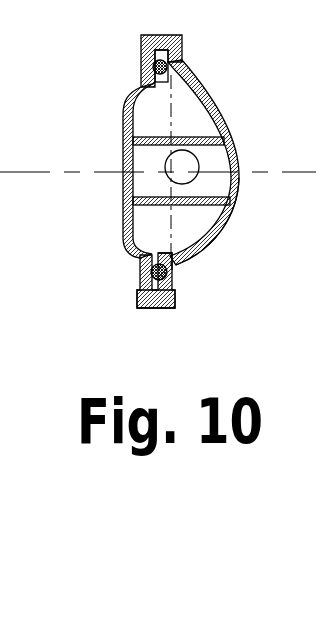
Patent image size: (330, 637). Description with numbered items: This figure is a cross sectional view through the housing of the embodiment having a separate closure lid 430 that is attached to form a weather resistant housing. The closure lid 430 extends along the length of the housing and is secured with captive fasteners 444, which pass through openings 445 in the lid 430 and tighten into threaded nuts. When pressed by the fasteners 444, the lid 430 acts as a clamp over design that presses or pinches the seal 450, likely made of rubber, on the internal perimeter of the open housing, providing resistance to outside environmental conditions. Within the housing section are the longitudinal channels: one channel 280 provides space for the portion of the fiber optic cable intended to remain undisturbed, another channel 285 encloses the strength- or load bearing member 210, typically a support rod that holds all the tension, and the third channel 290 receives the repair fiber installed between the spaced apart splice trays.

The seal 450 is at (155, 68).
The closure lid 430 is at (122, 158).
The openings 445 is at (139, 293).
The fasteners 444 is at (157, 308).
The third channel 290 is at (187, 110).
The channel 285 is at (222, 157).
The load bearing member 210 is at (200, 178).
The channel 280 is at (166, 255).